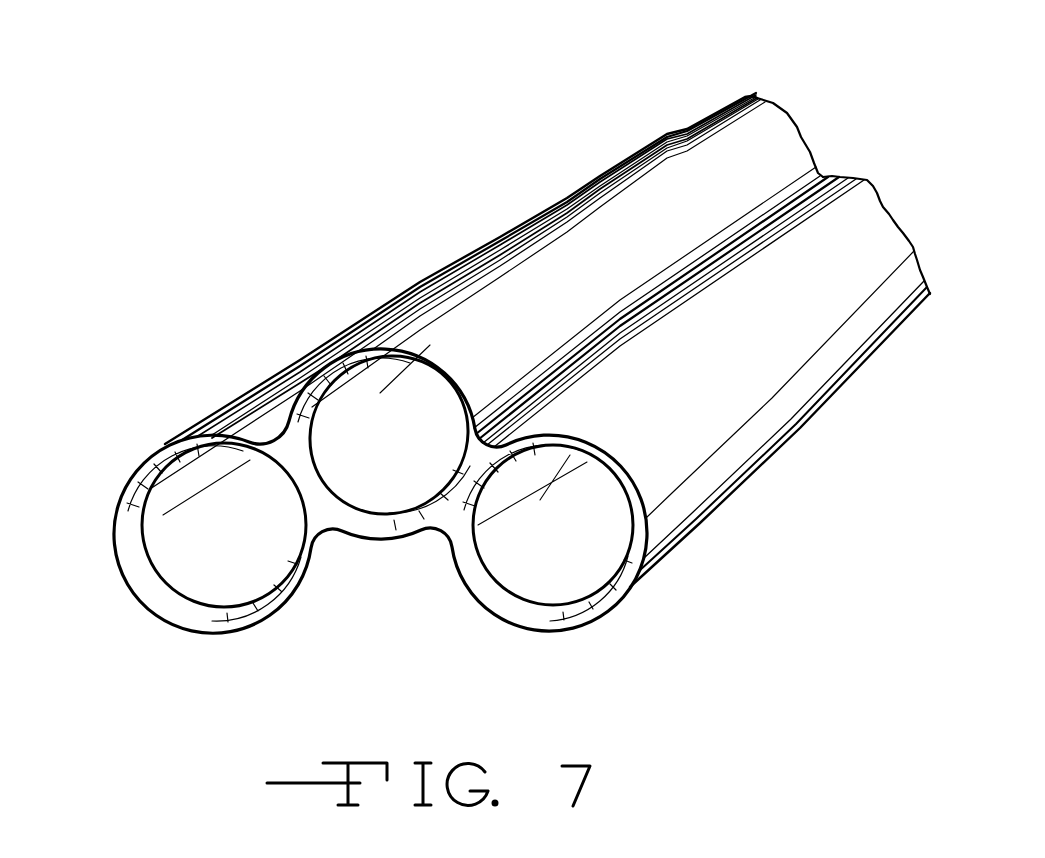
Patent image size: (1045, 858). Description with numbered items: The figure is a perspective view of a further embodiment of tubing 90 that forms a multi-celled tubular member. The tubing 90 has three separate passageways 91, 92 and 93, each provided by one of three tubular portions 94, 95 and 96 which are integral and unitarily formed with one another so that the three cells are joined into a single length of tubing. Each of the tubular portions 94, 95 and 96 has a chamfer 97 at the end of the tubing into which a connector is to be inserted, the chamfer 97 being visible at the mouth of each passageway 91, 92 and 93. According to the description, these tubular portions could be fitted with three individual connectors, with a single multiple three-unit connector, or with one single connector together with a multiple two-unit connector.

The tubing 90 is at (466, 226).
The passageway 91 is at (197, 578).
The passageway 92 is at (403, 493).
The passageway 93 is at (575, 573).
The tubular portion 94 is at (210, 417).
The tubular portion 95 is at (787, 109).
The tubular portion 96 is at (862, 210).
The chamfer 97 is at (142, 567).